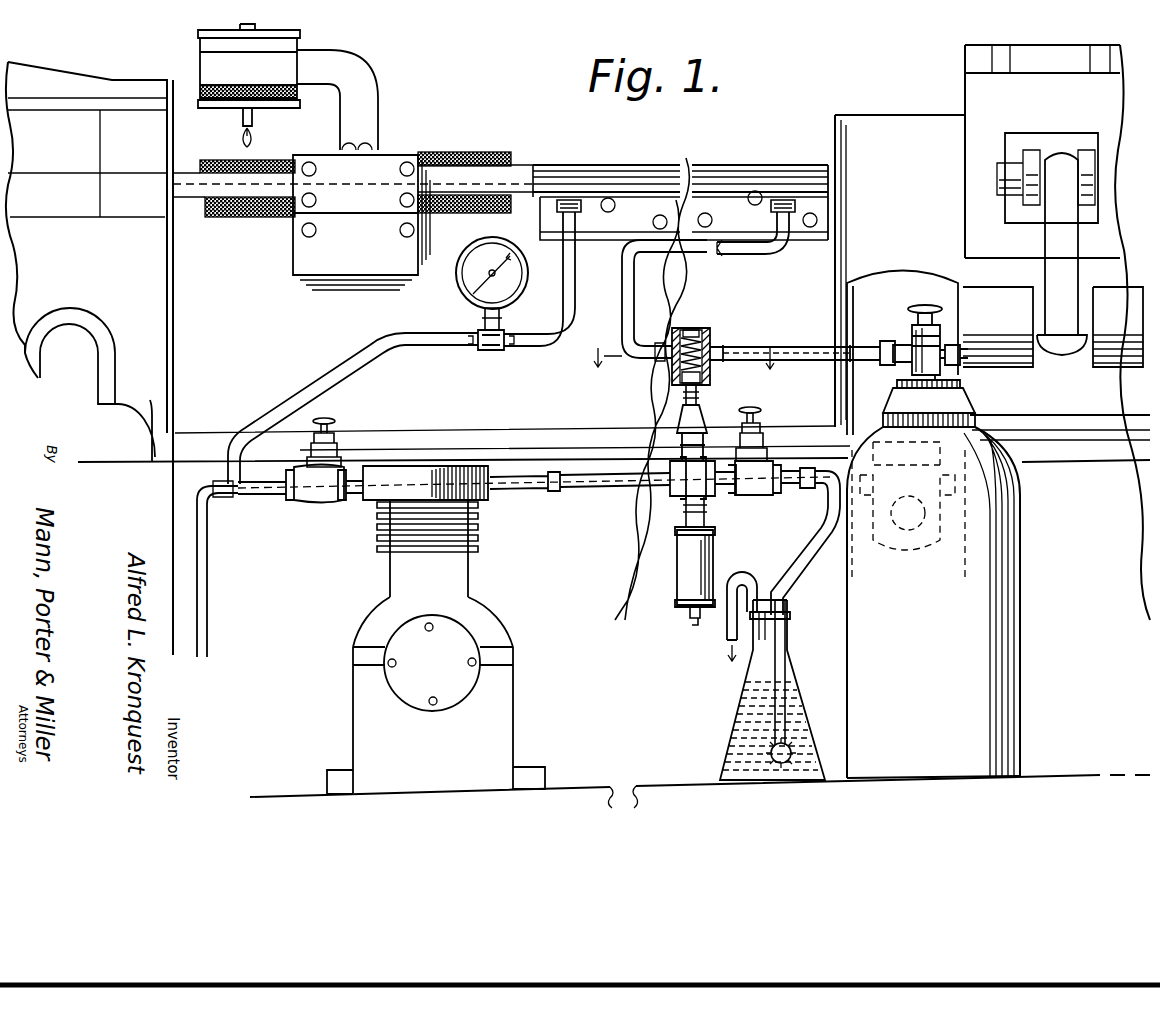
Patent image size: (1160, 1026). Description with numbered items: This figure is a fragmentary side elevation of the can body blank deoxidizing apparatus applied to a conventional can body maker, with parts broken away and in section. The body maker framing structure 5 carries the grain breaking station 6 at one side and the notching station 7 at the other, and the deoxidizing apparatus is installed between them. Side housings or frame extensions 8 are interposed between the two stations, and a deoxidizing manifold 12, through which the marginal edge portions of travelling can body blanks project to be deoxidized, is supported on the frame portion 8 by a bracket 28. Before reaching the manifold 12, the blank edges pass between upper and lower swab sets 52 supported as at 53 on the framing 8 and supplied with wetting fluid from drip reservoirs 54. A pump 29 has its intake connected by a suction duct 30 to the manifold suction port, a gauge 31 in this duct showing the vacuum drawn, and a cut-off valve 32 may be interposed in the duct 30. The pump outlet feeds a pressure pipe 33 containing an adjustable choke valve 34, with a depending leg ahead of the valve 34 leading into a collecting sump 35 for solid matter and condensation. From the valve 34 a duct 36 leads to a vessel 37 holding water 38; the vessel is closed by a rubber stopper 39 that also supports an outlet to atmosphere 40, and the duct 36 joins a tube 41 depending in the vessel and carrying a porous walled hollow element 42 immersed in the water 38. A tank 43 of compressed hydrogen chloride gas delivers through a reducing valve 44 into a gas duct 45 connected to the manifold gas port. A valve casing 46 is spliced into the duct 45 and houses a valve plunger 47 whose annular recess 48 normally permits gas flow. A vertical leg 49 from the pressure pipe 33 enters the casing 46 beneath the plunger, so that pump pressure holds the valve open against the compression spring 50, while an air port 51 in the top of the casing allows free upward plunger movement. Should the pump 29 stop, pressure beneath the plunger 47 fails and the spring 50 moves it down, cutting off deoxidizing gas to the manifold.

The body maker framing structure 5 is at (208, 575).
The grain breaking station 6 is at (122, 128).
The notching station 7 is at (980, 93).
The side housings or frame extensions 8 is at (836, 246).
The deoxidizing manifold 12 is at (646, 156).
The bracket 28 is at (717, 200).
The pump 29 is at (436, 630).
The suction duct 30 is at (560, 222).
The gauge 31 is at (457, 290).
The cut-off valve 32 is at (322, 500).
The pressure pipe 33 is at (551, 488).
The adjustable choke valve 34 is at (753, 487).
The collecting sump 35 is at (686, 550).
The duct 36 is at (800, 537).
The vessel 37 is at (740, 698).
The water 38 is at (750, 731).
The rubber stopper 39 is at (783, 610).
The outlet to atmosphere 40 is at (726, 624).
The tube 41 is at (788, 677).
The porous walled hollow element 42 is at (805, 732).
The tank of compressed hydrogen chloride gas 43 is at (1000, 622).
The reducing valve 44 is at (928, 350).
The gas duct 45 is at (810, 362).
The valve casing 46 is at (710, 346).
The valve plunger 47 is at (708, 330).
The annular recess 48 is at (674, 370).
The vertical leg 49 is at (703, 394).
The compression spring 50 is at (680, 330).
The air port 51 is at (698, 332).
The swab sets 52 is at (443, 194).
The swab support 53 is at (325, 163).
The drip reservoirs 54 is at (300, 40).